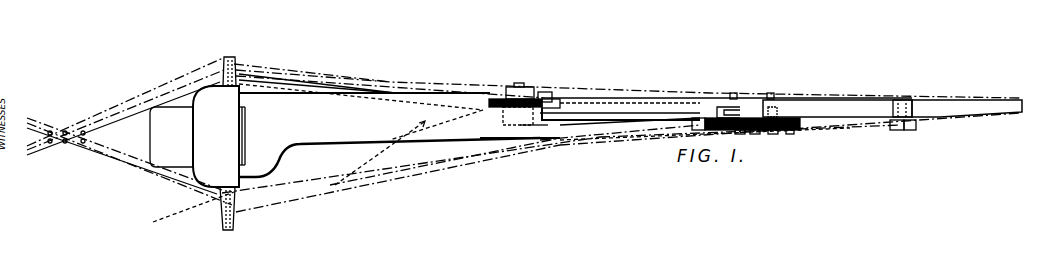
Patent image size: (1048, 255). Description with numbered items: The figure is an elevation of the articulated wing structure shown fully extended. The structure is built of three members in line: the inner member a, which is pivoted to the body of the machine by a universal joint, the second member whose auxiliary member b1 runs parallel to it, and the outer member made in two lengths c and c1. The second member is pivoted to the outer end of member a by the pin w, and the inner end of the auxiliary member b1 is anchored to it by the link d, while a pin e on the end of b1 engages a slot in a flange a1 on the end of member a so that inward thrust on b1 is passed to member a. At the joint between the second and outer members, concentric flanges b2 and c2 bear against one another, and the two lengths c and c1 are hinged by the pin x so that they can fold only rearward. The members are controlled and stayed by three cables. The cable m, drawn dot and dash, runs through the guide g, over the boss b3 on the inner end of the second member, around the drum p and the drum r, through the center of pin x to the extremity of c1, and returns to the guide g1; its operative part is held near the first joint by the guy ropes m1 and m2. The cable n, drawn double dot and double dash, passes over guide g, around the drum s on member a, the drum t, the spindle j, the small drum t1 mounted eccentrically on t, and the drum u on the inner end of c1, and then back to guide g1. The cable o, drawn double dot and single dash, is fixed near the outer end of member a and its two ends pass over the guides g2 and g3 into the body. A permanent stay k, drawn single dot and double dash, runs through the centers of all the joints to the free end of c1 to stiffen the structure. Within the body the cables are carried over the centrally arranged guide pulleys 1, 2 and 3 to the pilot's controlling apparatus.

The guide pulley 1 is at (63, 144).
The guide pulley 2 is at (82, 144).
The guide pulley 3 is at (48, 144).
The first member a is at (361, 134).
The flange a1 is at (506, 99).
The second member (auxiliary member) b1 is at (672, 112).
The boss or enlargement b3 is at (730, 106).
The flange b2 is at (735, 93).
The third member c is at (837, 108).
The outer part of third member c1 is at (957, 108).
The flange c2 is at (772, 93).
The link d is at (552, 100).
The pin e is at (548, 92).
The guide g is at (224, 64).
The guide g1 is at (130, 178).
The guide g2 is at (236, 62).
The guide g3 is at (222, 215).
The spindle j is at (773, 143).
The permanent stay k is at (848, 96).
The cable m is at (124, 150).
The guy rope m1 is at (630, 130).
The guy rope m2 is at (612, 131).
The cable n is at (170, 105).
The cable o is at (94, 114).
The drum p is at (739, 138).
The drum r is at (754, 138).
The drum s is at (538, 138).
The drum t is at (690, 127).
The small drum t1 is at (794, 139).
The drum u is at (896, 131).
The pin w is at (522, 140).
The pin x is at (910, 131).